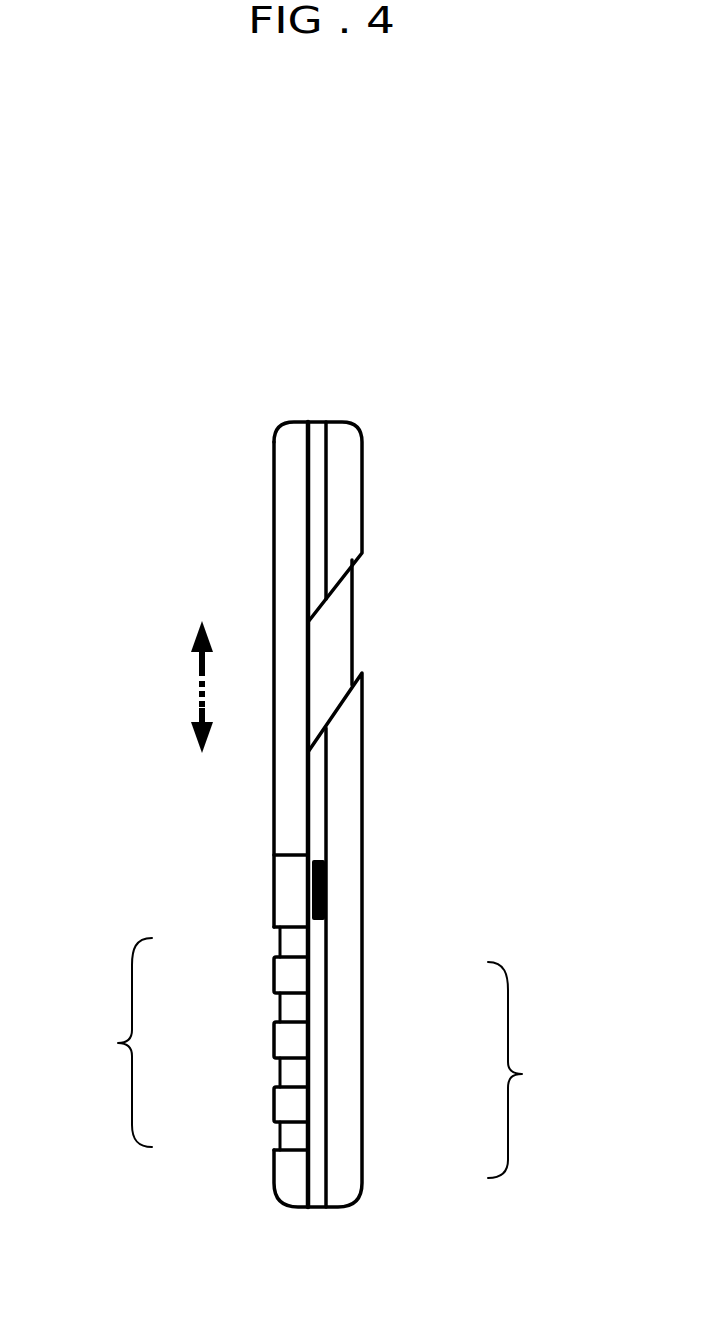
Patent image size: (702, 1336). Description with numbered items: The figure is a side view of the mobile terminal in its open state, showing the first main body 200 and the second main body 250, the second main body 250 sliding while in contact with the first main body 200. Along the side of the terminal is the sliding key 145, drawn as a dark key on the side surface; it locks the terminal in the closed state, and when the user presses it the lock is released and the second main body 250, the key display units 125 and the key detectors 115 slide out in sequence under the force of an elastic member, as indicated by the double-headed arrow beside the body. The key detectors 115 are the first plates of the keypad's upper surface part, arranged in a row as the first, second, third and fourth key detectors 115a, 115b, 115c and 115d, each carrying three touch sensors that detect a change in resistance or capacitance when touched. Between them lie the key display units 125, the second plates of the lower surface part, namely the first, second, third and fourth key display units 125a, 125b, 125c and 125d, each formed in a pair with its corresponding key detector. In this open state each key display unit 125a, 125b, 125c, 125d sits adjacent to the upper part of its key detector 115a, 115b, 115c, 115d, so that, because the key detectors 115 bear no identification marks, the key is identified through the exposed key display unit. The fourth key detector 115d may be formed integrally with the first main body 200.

The first main body 200 is at (270, 1210).
The second main body 250 is at (368, 474).
The sliding key 145 is at (327, 882).
The key detectors 115 is at (536, 1070).
The first key detector 115a is at (297, 979).
The second key detector 115b is at (297, 1045).
The third key detector 115c is at (297, 1110).
The fourth key detector 115d is at (297, 1173).
The key display units 125 is at (107, 1042).
The first key display unit 125a is at (288, 937).
The second key display unit 125b is at (288, 1004).
The third key display unit 125c is at (288, 1070).
The fourth key display unit 125d is at (288, 1134).